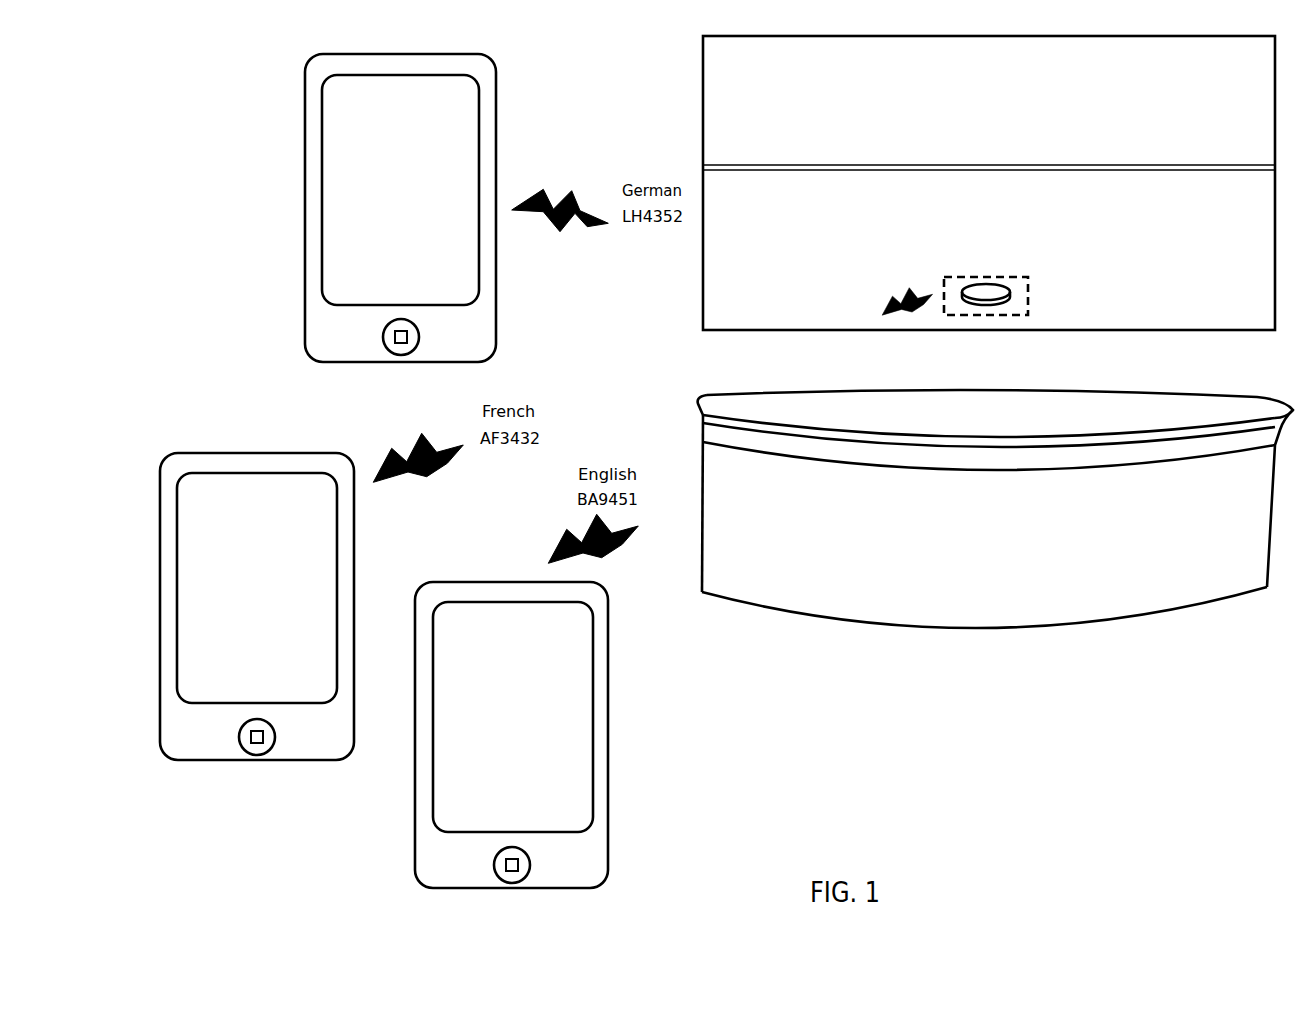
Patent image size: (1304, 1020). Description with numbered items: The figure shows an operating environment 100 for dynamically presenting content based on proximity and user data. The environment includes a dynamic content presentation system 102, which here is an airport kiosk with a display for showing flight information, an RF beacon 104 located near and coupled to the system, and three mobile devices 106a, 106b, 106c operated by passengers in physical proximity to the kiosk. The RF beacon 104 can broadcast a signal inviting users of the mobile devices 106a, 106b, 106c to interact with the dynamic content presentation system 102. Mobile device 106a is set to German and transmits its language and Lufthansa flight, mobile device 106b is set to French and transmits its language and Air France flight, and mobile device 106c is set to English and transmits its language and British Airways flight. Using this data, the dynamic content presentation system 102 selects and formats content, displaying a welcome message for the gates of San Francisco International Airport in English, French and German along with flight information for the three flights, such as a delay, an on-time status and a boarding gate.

The operating environment 100 is at (243, 63).
The dynamic content presentation system 102 is at (703, 58).
The RF beacon 104 is at (1010, 297).
The mobile device 106a is at (305, 195).
The mobile device 106b is at (168, 452).
The mobile device 106c is at (428, 580).